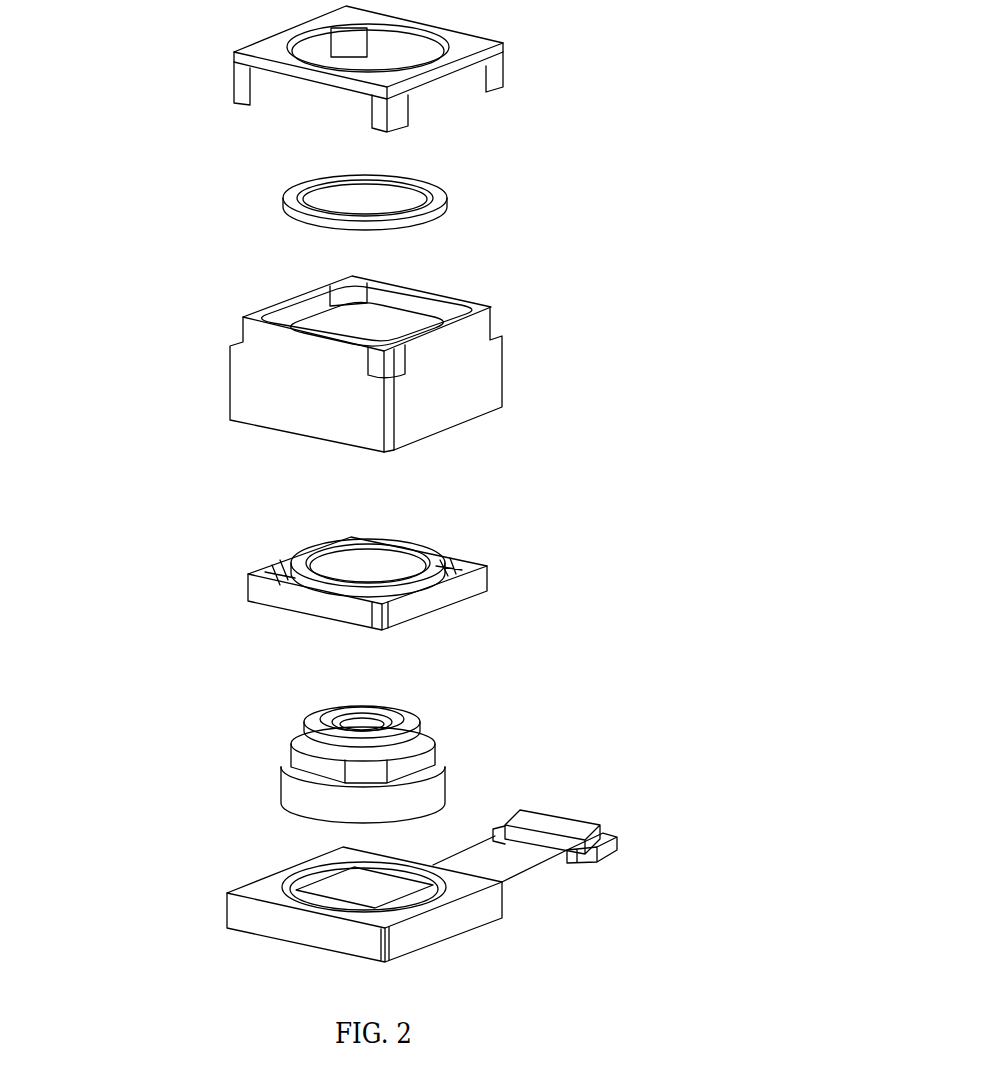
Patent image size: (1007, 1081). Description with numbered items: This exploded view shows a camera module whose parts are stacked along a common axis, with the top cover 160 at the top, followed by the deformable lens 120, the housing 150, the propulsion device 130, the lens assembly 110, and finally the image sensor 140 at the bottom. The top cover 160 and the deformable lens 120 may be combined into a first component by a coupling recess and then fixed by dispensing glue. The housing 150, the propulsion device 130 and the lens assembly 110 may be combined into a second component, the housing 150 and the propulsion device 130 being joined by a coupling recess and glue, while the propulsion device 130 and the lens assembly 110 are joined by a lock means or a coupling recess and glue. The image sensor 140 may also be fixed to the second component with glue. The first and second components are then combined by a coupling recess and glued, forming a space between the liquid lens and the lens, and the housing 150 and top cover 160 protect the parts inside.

The lens assembly 110 is at (415, 805).
The deformable lens 120 is at (328, 203).
The propulsion device 130 is at (278, 599).
The image sensor 140 is at (278, 917).
The housing 150 is at (468, 378).
The top cover 160 is at (470, 43).